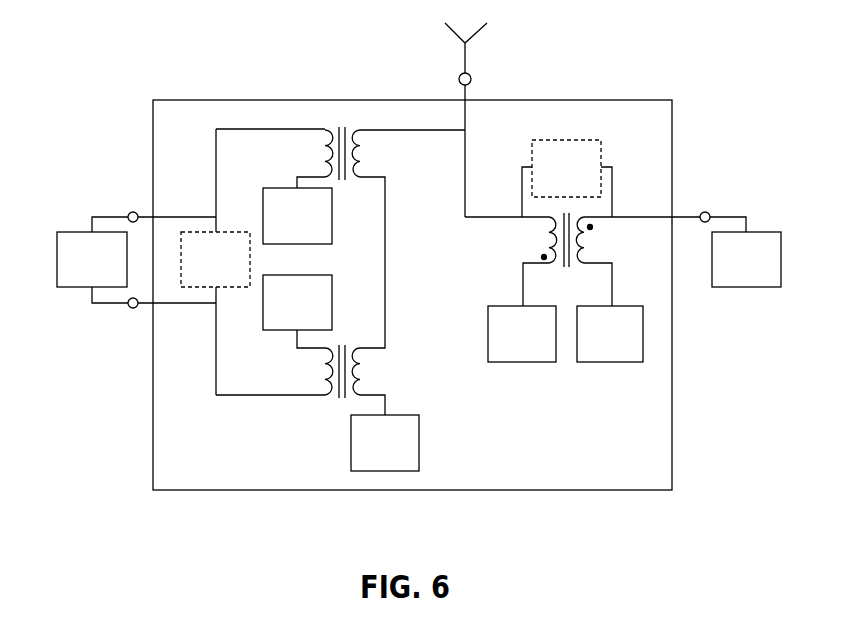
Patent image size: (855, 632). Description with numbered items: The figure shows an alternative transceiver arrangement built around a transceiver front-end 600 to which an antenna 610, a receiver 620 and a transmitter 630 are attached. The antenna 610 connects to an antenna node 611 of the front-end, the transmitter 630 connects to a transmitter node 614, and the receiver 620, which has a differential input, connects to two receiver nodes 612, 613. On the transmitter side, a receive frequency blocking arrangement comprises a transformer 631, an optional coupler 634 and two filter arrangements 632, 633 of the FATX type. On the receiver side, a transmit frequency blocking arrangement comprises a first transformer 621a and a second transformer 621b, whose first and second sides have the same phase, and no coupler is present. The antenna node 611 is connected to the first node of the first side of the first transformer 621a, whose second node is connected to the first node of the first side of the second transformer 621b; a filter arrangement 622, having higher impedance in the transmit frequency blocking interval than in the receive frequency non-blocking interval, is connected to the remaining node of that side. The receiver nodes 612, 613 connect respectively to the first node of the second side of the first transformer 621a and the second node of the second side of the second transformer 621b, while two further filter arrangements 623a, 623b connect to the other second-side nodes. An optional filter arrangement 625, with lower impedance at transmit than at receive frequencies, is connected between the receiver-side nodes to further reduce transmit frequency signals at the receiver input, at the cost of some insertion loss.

The transceiver front-end 600 is at (592, 100).
The antenna 610 is at (448, 32).
The antenna node 611 is at (471, 77).
The receiver node 612 is at (129, 213).
The receiver node 613 is at (129, 308).
The transmitter node 614 is at (711, 211).
The receiver 620 is at (77, 279).
The first transformer 621a is at (358, 152).
The second transformer 621b is at (358, 370).
The filter arrangement 622 is at (370, 465).
The filter arrangement 623a is at (277, 238).
The filter arrangement 623b is at (277, 325).
The filter arrangement 625 is at (200, 282).
The transmitter 630 is at (731, 279).
The transformer 631 is at (540, 242).
The filter arrangement 632 is at (507, 356).
The filter arrangement 633 is at (595, 356).
The coupler 634 is at (551, 189).